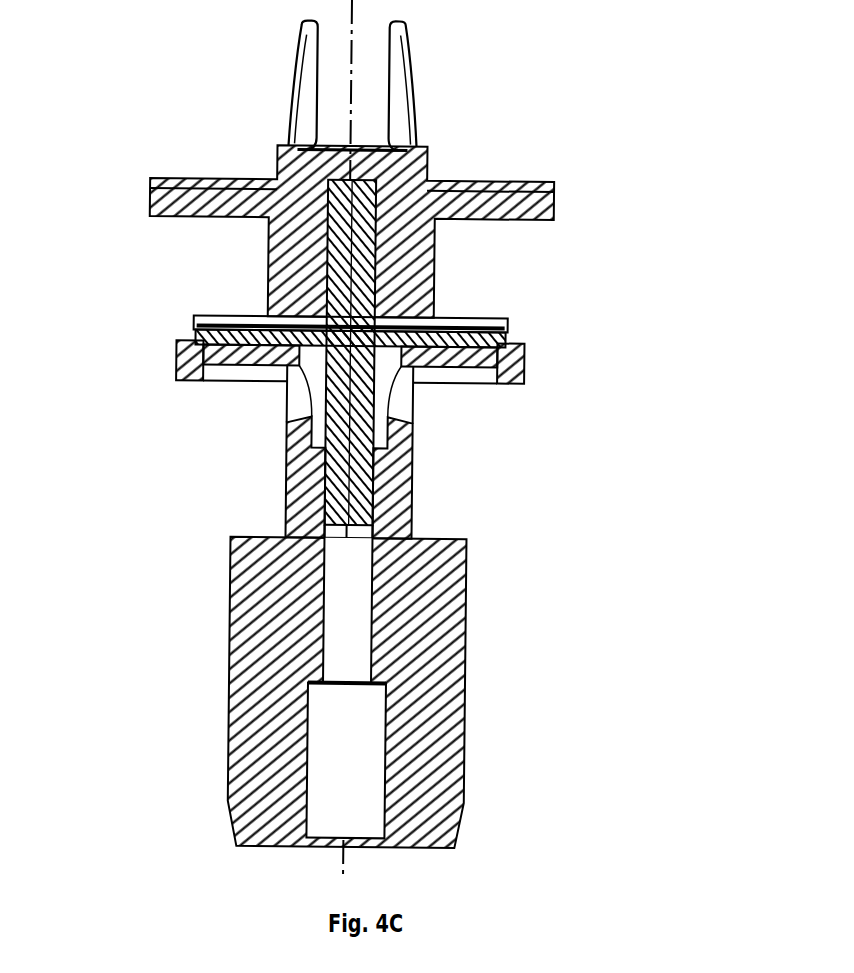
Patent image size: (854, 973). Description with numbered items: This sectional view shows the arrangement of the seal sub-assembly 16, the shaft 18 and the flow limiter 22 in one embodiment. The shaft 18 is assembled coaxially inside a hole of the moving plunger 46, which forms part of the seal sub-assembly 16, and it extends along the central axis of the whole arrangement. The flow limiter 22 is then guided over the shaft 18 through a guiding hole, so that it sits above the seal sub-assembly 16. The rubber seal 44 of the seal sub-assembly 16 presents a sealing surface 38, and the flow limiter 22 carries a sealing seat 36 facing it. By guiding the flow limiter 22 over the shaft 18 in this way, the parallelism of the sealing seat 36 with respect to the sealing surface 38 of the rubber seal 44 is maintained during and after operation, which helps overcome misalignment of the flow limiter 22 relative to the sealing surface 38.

The seal sub-assembly 16 is at (635, 333).
The shaft 18 is at (435, 270).
The flow limiter 22 is at (413, 148).
The sealing seat 36 is at (513, 330).
The sealing surface 38 is at (197, 332).
The rubber seal 44 is at (165, 362).
The moving plunger 46 is at (230, 630).